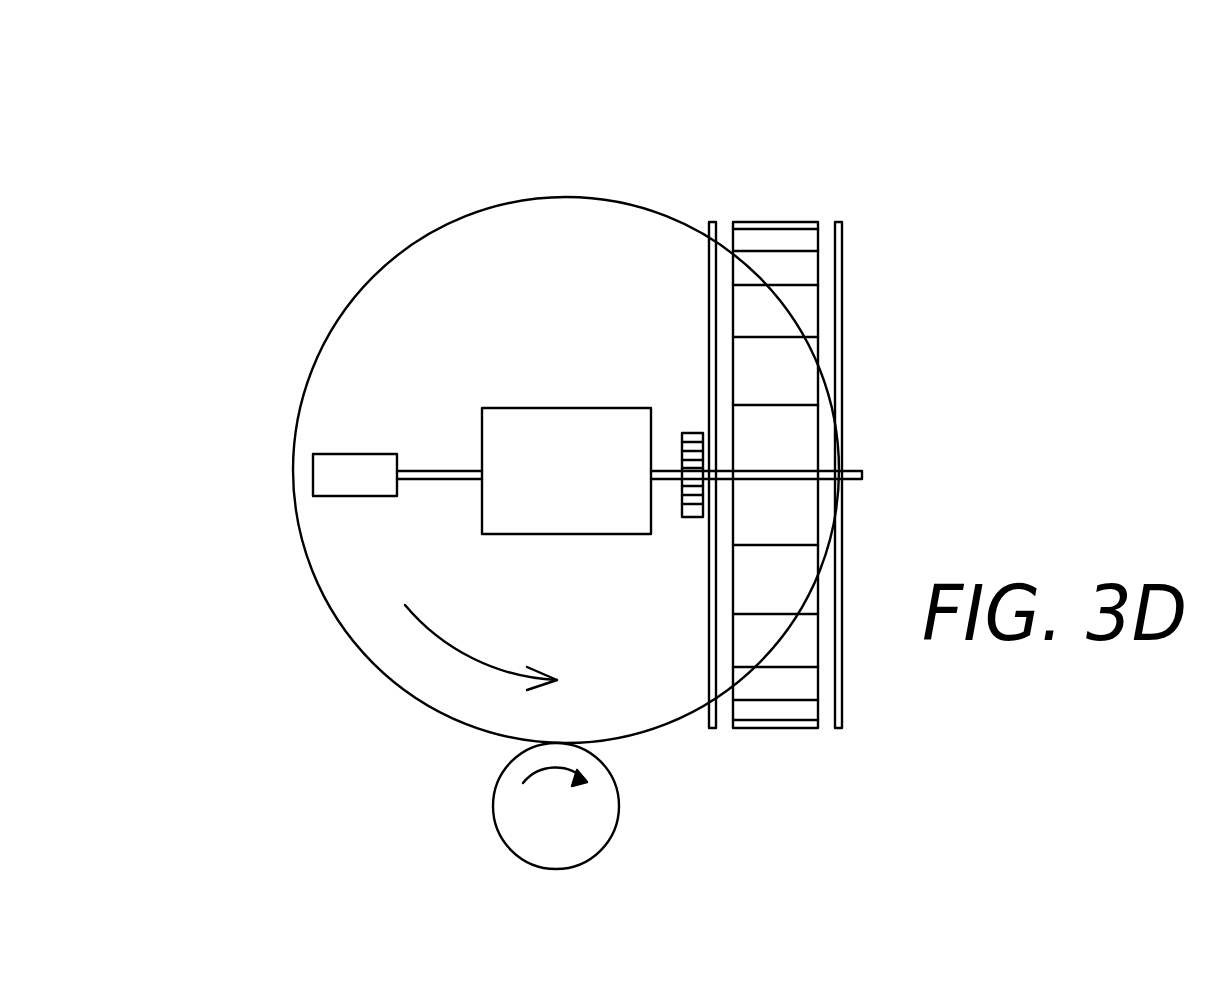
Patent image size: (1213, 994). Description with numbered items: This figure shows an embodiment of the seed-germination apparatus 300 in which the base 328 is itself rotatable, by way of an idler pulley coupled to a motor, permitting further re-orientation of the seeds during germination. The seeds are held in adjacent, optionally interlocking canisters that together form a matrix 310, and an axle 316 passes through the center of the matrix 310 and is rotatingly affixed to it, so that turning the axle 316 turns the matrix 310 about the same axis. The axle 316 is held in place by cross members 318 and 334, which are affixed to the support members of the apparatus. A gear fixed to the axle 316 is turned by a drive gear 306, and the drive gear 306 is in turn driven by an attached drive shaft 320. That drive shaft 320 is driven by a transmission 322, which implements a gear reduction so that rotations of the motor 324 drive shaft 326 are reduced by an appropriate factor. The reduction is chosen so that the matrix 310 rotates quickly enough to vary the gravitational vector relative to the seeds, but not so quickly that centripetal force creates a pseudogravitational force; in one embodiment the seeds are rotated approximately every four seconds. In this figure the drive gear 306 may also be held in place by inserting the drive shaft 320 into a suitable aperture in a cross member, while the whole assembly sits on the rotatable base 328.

The drive system 300 is at (312, 167).
The matrix 310 is at (805, 200).
The cross member 318 is at (716, 250).
The cross member 334 is at (843, 332).
The drive gear 306 is at (693, 517).
The drive shaft 320 is at (665, 468).
The transmission 322 is at (570, 408).
The motor 324 is at (365, 454).
The motor drive shaft 326 is at (450, 470).
The axle 316 is at (856, 471).
The base 328 is at (306, 558).